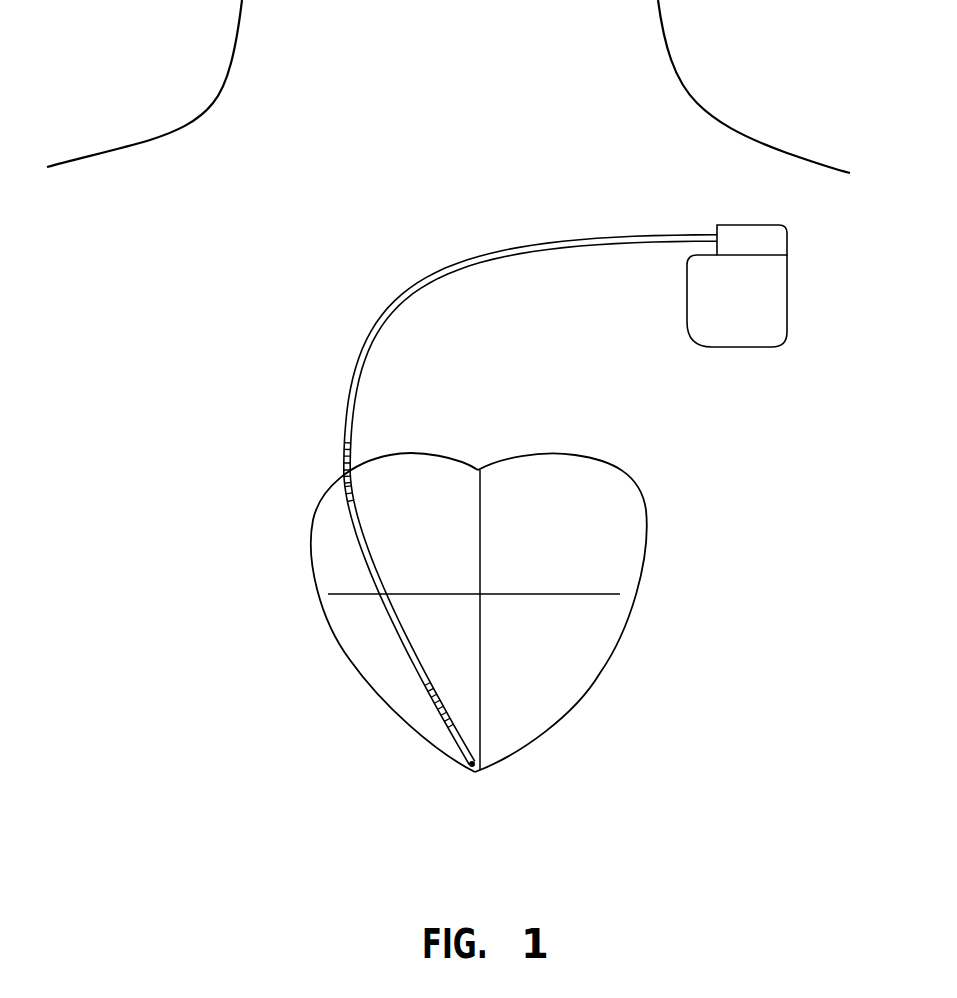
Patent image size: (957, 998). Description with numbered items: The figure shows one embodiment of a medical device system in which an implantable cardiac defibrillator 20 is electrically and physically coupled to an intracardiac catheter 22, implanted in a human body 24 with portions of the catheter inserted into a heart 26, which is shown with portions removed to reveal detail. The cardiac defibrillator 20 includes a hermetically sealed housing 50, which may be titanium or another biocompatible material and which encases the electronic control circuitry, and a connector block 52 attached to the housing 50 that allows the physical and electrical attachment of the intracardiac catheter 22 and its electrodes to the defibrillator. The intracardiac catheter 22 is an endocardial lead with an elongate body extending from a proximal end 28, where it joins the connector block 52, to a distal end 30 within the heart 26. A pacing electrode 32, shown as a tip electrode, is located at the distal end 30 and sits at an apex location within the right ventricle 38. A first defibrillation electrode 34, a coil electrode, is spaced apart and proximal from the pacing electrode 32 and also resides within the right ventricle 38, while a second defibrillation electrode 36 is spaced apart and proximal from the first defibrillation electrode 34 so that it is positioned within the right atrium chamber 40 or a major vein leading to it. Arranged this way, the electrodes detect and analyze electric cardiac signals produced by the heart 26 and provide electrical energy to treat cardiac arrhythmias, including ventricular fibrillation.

The implantable cardiac defibrillator 20 is at (771, 290).
The intracardiac catheter 22 is at (503, 256).
The human body 24 is at (129, 224).
The heart 26 is at (489, 612).
The proximal end 28 is at (741, 225).
The distal end 30 is at (521, 806).
The pacing electrode 32 is at (482, 757).
The first defibrillation electrode 34 is at (430, 707).
The second defibrillation electrode 36 is at (338, 480).
The right ventricle 38 is at (422, 637).
The right atrium chamber 40 is at (410, 566).
The housing 50 is at (757, 322).
The connector block 52 is at (763, 243).